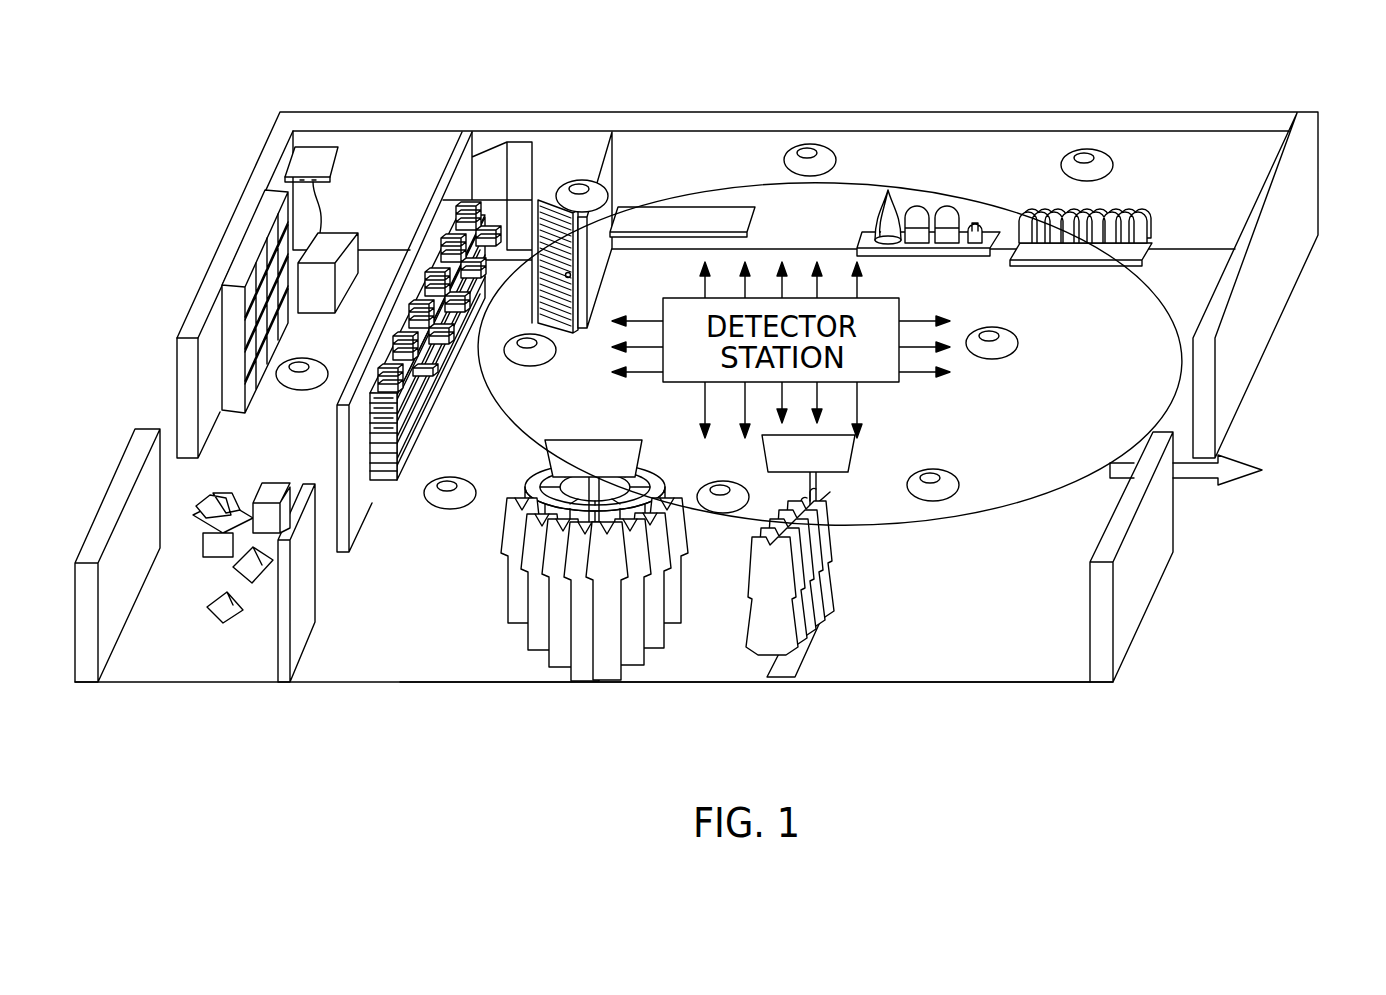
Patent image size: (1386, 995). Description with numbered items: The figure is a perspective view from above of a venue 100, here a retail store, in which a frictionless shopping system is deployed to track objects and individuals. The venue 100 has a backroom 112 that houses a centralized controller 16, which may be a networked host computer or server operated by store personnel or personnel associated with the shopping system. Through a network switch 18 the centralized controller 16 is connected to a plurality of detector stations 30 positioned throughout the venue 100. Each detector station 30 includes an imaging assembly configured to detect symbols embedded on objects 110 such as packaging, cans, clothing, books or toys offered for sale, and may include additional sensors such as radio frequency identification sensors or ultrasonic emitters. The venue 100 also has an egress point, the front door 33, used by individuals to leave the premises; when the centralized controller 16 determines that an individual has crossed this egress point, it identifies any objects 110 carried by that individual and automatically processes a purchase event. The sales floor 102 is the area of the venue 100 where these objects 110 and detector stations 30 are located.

The venue 100 is at (221, 103).
The sales floor 102 is at (393, 670).
The backroom 112 is at (185, 670).
The centralized controller 16 is at (358, 233).
The network switch 18 is at (333, 163).
The detector stations 30 is at (607, 190).
The front door 33 is at (1298, 478).
The objects 110 is at (418, 404).